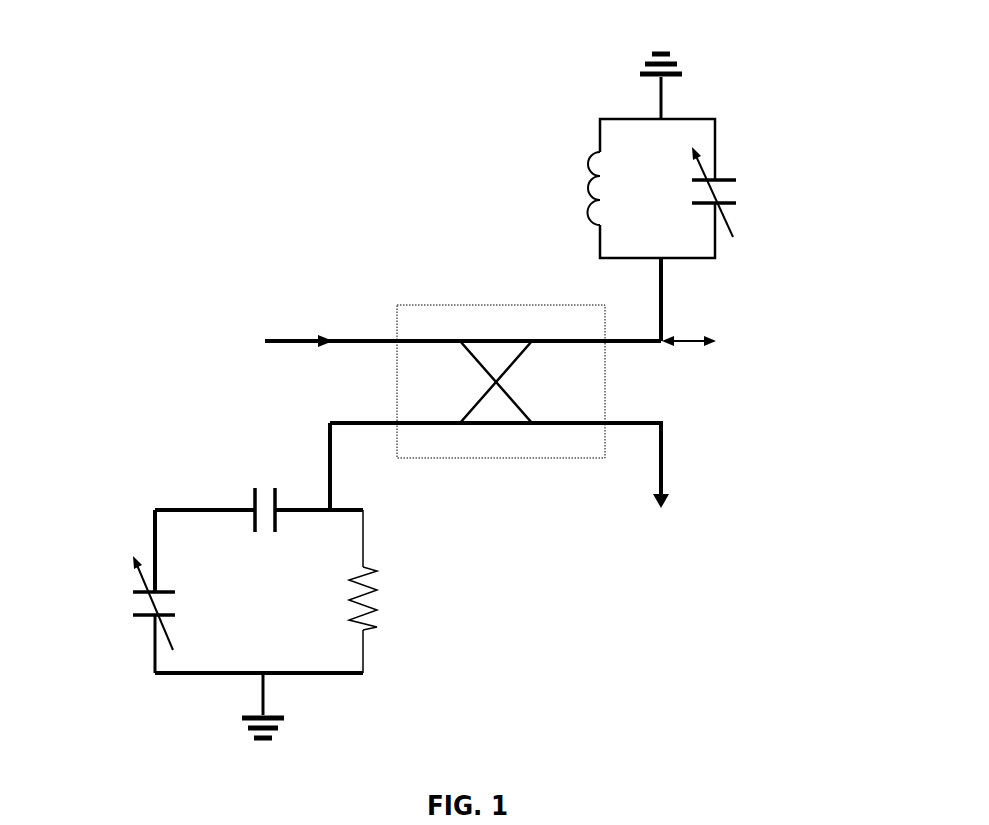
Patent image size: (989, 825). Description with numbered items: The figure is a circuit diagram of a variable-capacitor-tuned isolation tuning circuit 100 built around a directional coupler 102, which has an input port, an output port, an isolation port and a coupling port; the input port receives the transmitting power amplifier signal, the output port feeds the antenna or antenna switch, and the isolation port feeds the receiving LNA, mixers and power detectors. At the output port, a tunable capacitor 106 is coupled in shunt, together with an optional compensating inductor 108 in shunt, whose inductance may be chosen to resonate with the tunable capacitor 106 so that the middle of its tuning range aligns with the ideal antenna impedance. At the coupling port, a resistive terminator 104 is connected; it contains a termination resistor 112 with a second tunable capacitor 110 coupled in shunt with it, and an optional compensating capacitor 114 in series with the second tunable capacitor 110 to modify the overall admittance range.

The variable-capacitor-tuned isolation tuning circuit 100 is at (219, 99).
The directional coupler 102 is at (426, 289).
The resistive terminator 104 is at (118, 480).
The tunable capacitor 106 is at (764, 186).
The compensating inductor 108 is at (576, 183).
The second tunable capacitor 110 is at (114, 602).
The termination resistor 112 is at (400, 597).
The compensating capacitor 114 is at (263, 473).